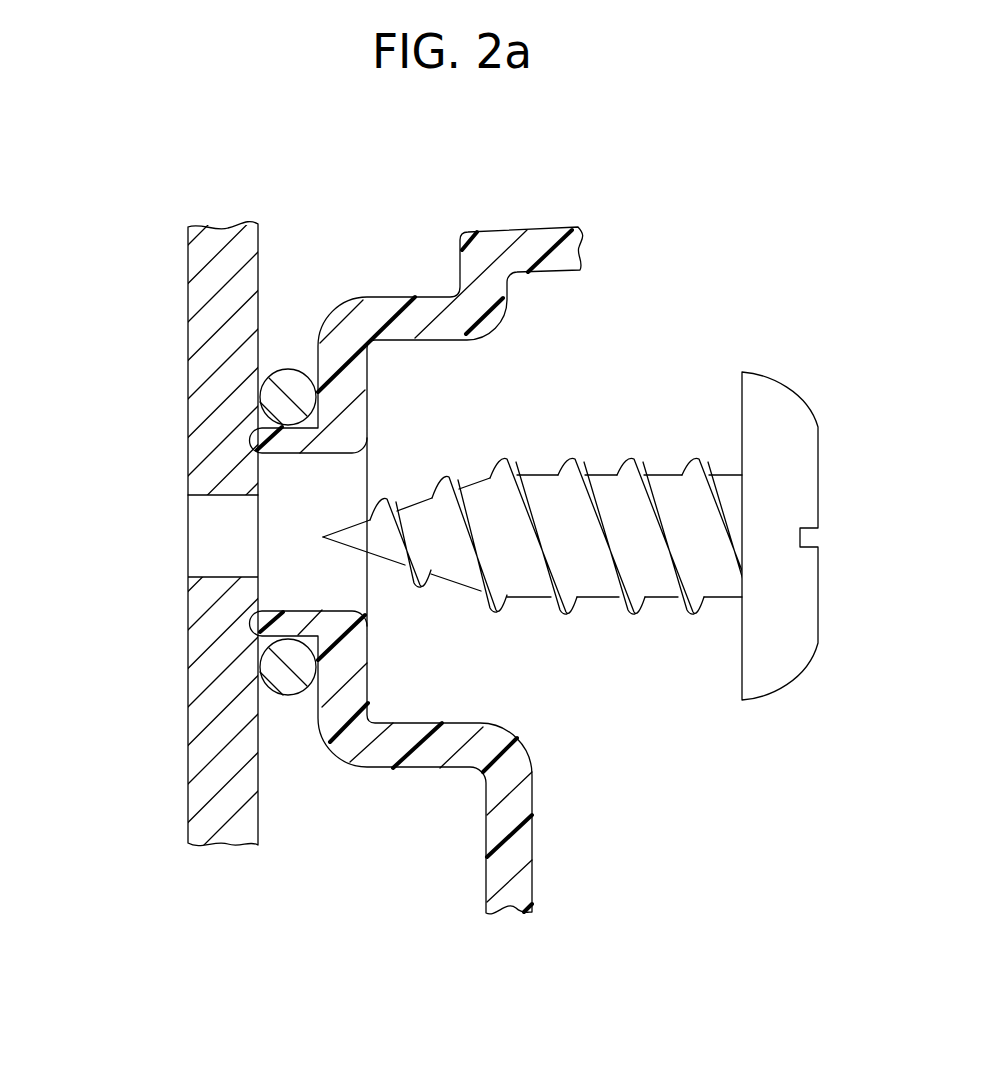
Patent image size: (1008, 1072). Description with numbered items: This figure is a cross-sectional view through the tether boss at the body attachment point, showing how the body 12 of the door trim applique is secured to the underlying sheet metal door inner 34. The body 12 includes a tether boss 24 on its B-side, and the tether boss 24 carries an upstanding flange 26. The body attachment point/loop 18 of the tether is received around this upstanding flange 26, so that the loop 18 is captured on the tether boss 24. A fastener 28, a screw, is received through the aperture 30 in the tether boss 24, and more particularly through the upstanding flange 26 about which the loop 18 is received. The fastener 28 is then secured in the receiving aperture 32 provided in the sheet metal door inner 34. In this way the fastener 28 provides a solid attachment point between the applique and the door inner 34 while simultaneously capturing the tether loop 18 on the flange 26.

The body 12 is at (546, 228).
The body attachment point/loop 18 is at (283, 382).
The tether boss 24 is at (368, 598).
The upstanding flange 26 is at (293, 613).
The fastener 28 is at (788, 410).
The aperture 30 is at (348, 482).
The receiving aperture 32 is at (210, 558).
The sheet metal door inner 34 is at (210, 373).